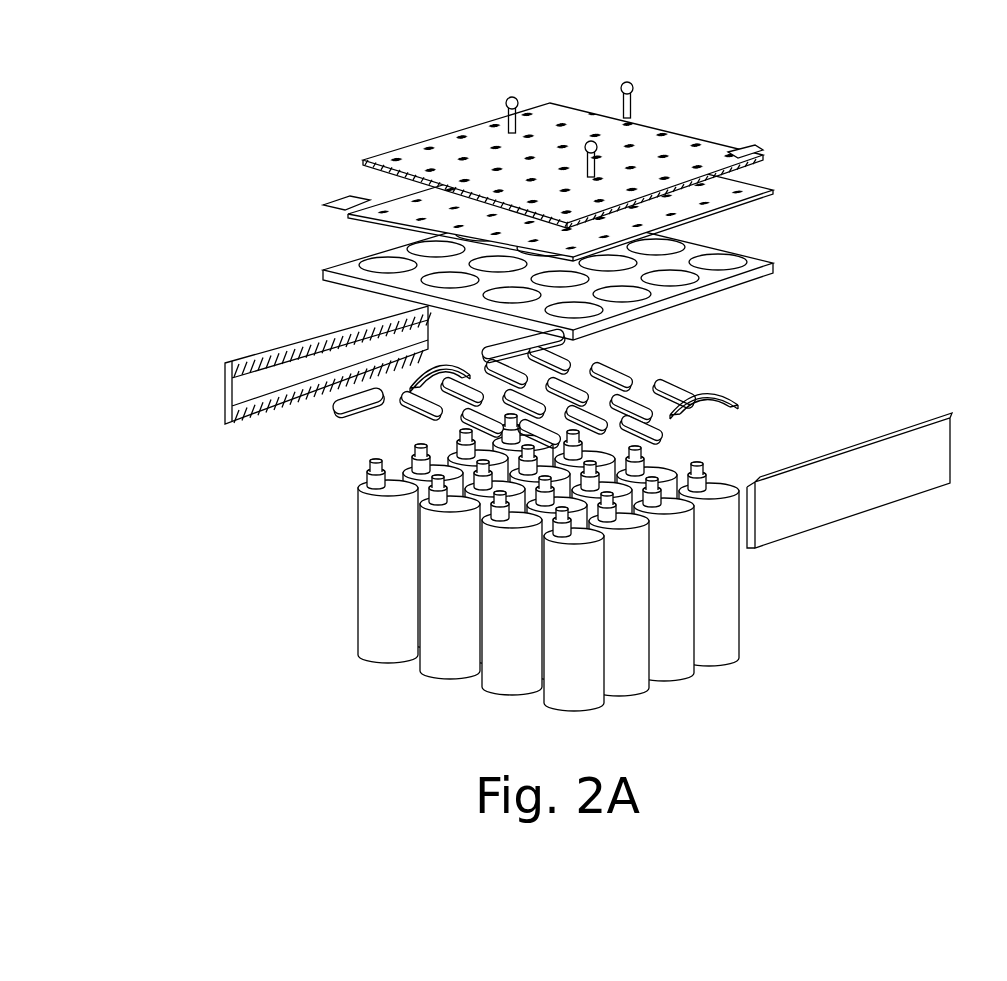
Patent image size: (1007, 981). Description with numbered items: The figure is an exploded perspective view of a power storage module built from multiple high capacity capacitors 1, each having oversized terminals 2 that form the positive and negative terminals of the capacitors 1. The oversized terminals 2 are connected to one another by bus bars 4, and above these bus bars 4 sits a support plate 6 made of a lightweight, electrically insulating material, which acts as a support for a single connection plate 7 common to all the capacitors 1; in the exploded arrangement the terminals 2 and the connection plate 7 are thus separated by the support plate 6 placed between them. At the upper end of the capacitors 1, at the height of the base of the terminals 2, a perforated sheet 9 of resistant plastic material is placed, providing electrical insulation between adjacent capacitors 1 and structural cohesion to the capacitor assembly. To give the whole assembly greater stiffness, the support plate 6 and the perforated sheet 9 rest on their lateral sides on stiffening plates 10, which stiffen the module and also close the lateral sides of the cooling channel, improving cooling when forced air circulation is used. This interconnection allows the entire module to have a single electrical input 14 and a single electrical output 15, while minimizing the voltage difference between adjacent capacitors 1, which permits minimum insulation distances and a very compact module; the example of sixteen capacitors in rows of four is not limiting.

The high capacity capacitor 1 is at (720, 592).
The oversized terminal 2 is at (533, 497).
The bus bar 4 is at (715, 408).
The support plate 6 is at (412, 202).
The connection plate 7 is at (532, 163).
The perforated sheet 9 is at (747, 261).
The stiffening plate 10 is at (270, 348).
The electrical input 14 is at (530, 343).
The electrical output 15 is at (345, 403).